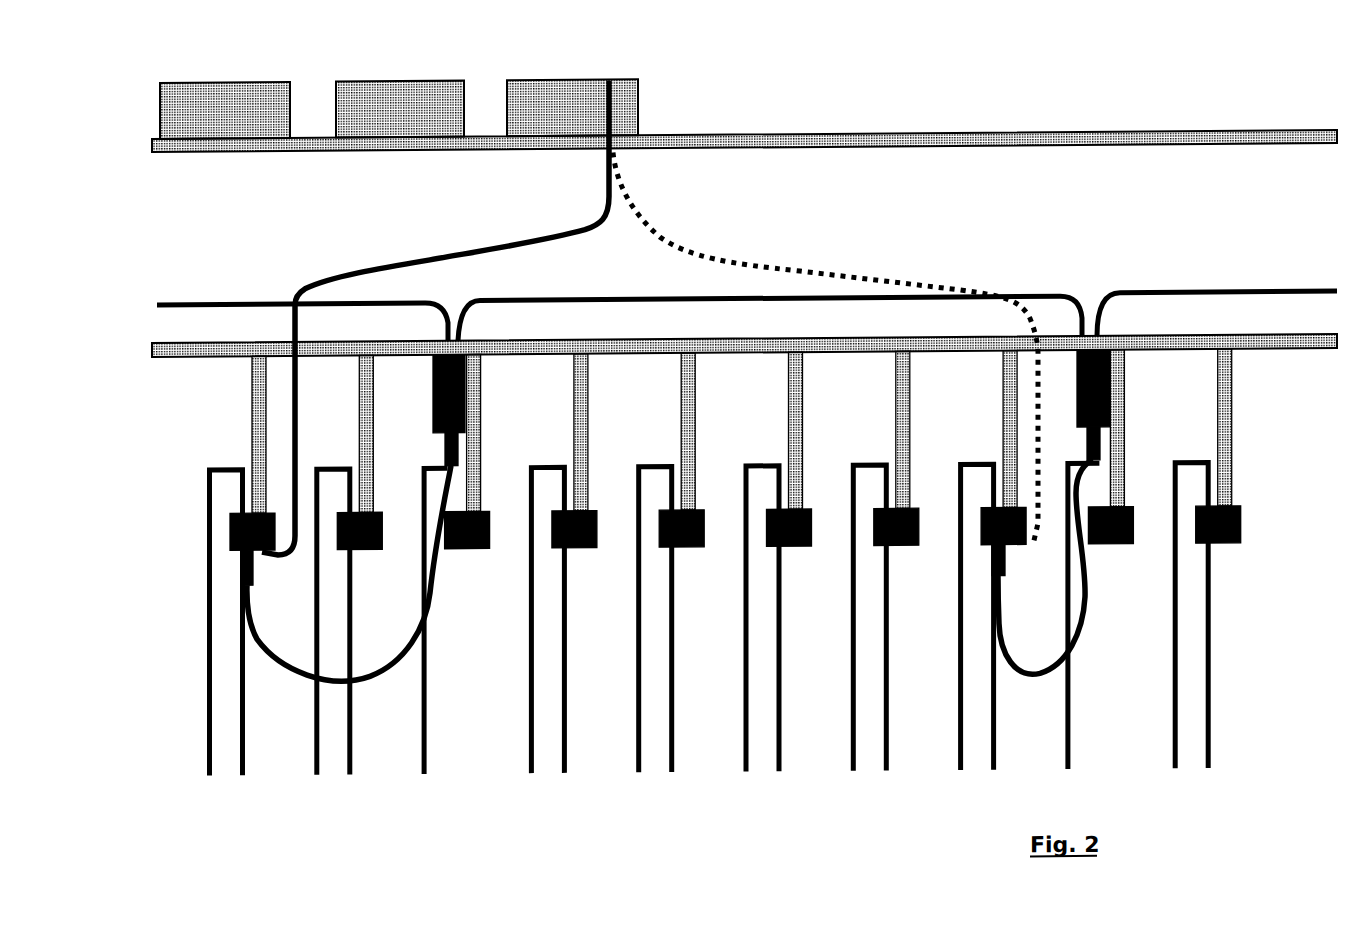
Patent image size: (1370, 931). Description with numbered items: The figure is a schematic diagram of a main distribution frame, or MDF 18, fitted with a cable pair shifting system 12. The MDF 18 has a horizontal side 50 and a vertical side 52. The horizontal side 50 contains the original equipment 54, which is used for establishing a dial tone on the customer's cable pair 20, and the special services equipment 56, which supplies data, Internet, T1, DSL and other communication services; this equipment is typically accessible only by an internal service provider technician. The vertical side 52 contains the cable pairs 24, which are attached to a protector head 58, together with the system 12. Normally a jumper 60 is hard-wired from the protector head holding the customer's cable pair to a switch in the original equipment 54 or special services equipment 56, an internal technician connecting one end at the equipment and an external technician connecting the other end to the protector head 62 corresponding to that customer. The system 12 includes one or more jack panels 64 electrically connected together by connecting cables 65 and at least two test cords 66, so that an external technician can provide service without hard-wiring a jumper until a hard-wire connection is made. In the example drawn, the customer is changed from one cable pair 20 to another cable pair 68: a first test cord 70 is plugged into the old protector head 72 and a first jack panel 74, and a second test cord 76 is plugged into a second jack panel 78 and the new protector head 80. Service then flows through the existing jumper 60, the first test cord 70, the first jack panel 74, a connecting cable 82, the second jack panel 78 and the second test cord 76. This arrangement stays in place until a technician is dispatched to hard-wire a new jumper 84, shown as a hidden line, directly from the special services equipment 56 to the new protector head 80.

The system 12 is at (1079, 305).
The MDF 18 is at (1100, 70).
The cable pair 20 is at (214, 758).
The cable pairs 24 is at (525, 752).
The horizontal side 50 is at (838, 118).
The vertical side 52 is at (1262, 500).
The original equipment 54 is at (270, 84).
The special services equipment 56 is at (519, 78).
The protector head 58 is at (666, 556).
The jumper 60 is at (463, 260).
The protector head 62 is at (232, 545).
The jack panels 64 is at (432, 380).
The connecting cables 65 is at (222, 303).
The test cords 66 is at (358, 684).
The cable pair 68 is at (963, 752).
The first test cord 70 is at (378, 673).
The old protector head 72 is at (259, 562).
The first jack panel 74 is at (434, 422).
The second test cord 76 is at (1087, 608).
The second jack panel 78 is at (1112, 399).
The new protector head 80 is at (1009, 558).
The connecting cable 82 is at (768, 310).
The new jumper 84 is at (711, 262).